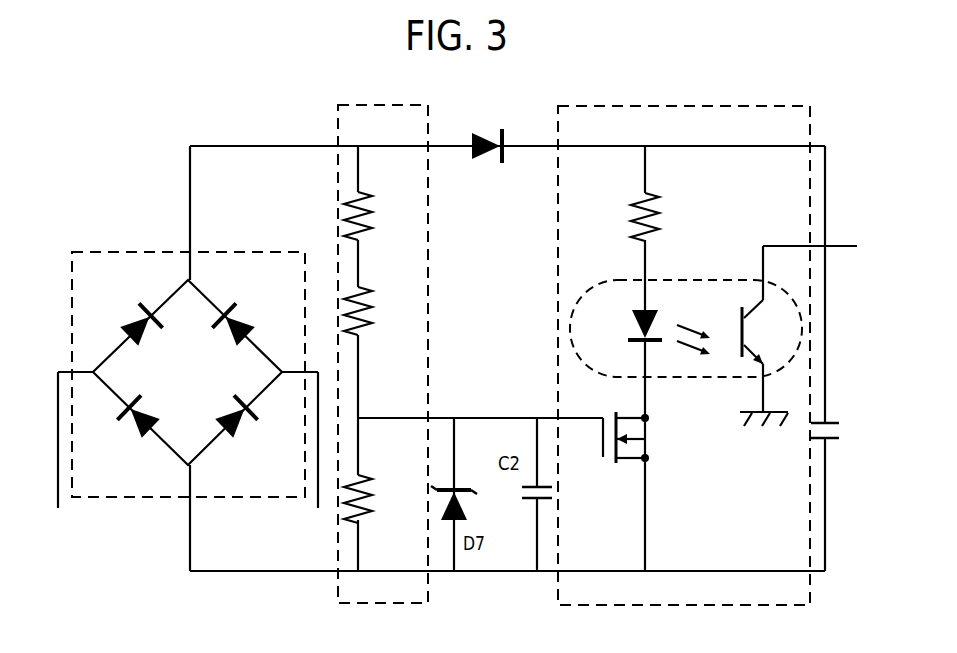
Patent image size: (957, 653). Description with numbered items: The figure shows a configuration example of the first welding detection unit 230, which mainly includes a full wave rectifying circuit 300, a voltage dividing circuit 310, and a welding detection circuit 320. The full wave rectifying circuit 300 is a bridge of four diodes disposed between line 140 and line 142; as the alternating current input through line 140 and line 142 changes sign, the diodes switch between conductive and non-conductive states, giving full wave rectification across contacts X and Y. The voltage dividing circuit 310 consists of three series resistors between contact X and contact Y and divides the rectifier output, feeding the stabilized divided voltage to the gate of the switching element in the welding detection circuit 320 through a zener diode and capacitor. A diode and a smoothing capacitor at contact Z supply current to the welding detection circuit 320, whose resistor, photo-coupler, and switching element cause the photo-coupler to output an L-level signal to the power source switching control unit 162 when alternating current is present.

The first welding detection unit 230 is at (874, 629).
The full wave rectifying circuit 300 is at (80, 252).
The voltage dividing circuit 310 is at (350, 105).
The welding detection circuit 320 is at (590, 106).
The line 140 is at (54, 457).
The line 142 is at (311, 457).
The power source switching control unit 162 is at (828, 247).